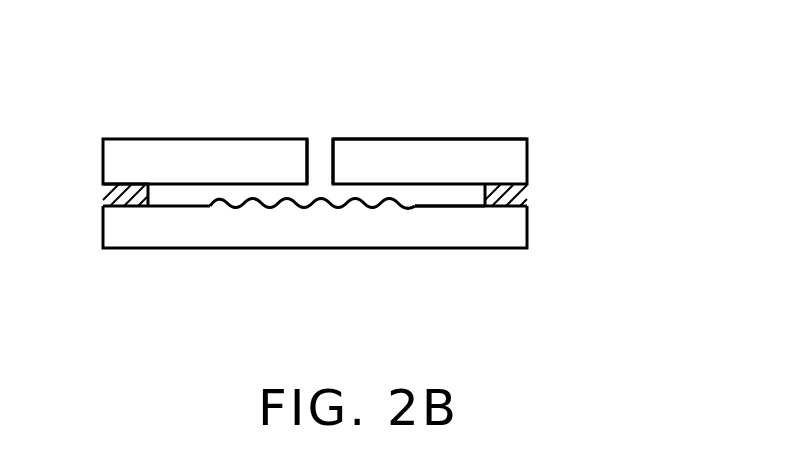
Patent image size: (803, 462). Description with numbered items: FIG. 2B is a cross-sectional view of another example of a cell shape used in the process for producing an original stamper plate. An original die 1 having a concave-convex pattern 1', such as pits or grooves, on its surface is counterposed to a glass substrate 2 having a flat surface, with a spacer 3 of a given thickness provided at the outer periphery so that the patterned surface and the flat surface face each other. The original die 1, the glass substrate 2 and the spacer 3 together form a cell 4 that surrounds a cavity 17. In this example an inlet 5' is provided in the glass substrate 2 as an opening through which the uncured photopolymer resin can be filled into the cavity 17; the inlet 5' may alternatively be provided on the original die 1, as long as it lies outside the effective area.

The original die 1 is at (360, 227).
The concave-convex pattern 1' is at (312, 259).
The glass substrate 2 is at (517, 152).
The spacer 3 is at (517, 197).
The cell 4 is at (443, 127).
The inlet 5' is at (353, 118).
The cavity 17 is at (452, 195).